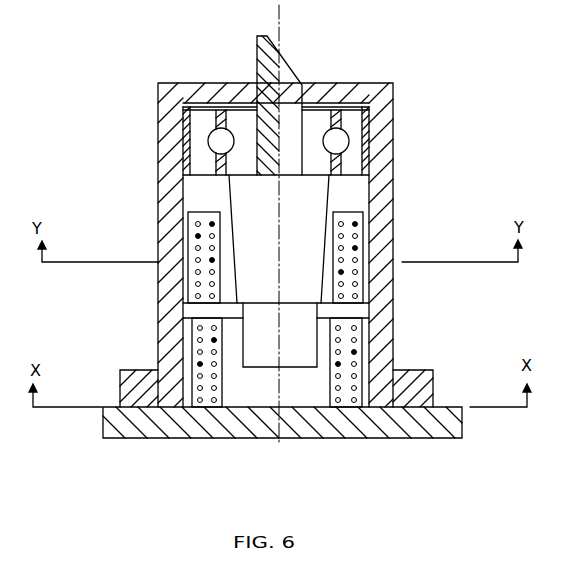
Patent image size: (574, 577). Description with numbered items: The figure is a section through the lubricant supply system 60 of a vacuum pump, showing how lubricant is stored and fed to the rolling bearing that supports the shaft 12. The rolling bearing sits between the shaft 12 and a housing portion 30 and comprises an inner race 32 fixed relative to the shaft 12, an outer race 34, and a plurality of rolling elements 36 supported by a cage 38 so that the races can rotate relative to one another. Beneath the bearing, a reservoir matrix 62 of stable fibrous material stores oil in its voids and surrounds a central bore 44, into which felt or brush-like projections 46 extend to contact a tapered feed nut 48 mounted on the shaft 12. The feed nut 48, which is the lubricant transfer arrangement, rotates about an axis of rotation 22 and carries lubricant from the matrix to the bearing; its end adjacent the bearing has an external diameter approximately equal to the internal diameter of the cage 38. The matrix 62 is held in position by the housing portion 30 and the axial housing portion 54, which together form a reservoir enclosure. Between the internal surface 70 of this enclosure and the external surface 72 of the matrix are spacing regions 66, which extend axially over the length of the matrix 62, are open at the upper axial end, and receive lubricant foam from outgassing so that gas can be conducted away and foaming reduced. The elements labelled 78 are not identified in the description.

The shaft 12 is at (272, 107).
The axis of rotation 22 is at (280, 26).
The housing portion 30 is at (384, 238).
The inner race 32 is at (218, 176).
The outer race 34 is at (187, 128).
The rolling elements 36 is at (213, 146).
The cage 38 is at (194, 100).
The central bore 44 is at (235, 377).
The projections 46 is at (190, 310).
The tapered feed nut 48 is at (312, 235).
The axial housing portion 54 is at (337, 420).
The lubricant supply system 60 is at (146, 247).
The reservoir matrix 62 is at (153, 370).
The spacing regions 66 is at (200, 330).
The internal surface of the reservoir enclosure 70 is at (192, 308).
The external surface of the reservoir matrix 72 is at (200, 338).
The fastener 78 is at (128, 443).